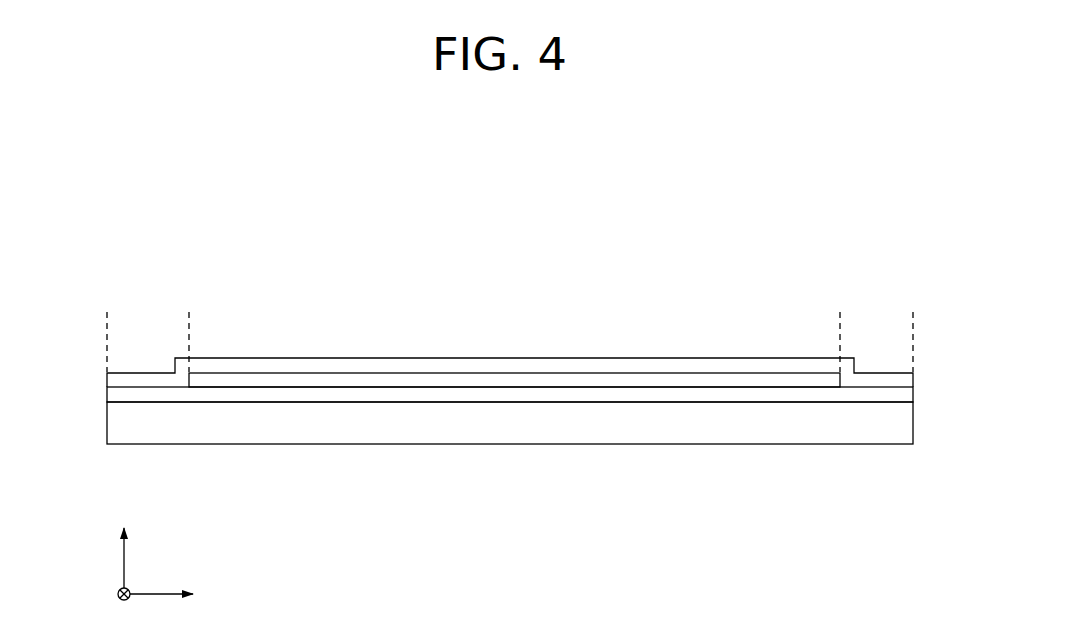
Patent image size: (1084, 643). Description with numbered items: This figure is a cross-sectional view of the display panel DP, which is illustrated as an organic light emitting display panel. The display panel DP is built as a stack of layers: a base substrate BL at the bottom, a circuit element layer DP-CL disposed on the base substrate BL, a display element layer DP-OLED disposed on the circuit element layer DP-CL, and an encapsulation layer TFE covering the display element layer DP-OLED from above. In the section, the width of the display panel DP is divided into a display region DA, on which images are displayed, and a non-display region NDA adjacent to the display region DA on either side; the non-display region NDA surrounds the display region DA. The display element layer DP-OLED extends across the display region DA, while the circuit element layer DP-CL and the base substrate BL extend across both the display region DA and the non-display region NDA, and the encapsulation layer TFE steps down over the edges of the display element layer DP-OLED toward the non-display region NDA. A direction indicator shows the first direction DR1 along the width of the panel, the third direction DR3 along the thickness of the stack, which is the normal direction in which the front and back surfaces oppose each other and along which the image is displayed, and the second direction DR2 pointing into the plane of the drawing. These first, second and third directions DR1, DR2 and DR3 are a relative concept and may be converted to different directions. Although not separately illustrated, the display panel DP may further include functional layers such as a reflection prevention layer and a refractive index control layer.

The display panel DP is at (823, 251).
The base substrate BL is at (353, 437).
The circuit element layer DP-CL is at (420, 393).
The display element layer DP-OLED is at (515, 381).
The encapsulation layer TFE is at (597, 365).
The display region DA is at (839, 313).
The non-display region NDA is at (188, 313).
The first direction DR1 is at (181, 593).
The second direction DR2 is at (125, 608).
The third direction DR3 is at (125, 543).